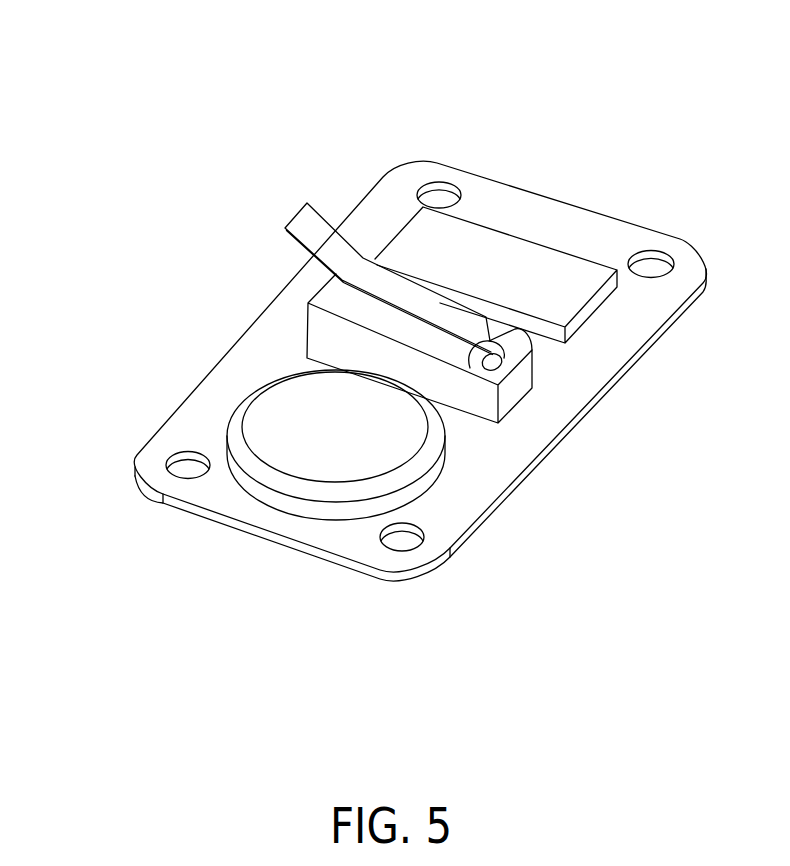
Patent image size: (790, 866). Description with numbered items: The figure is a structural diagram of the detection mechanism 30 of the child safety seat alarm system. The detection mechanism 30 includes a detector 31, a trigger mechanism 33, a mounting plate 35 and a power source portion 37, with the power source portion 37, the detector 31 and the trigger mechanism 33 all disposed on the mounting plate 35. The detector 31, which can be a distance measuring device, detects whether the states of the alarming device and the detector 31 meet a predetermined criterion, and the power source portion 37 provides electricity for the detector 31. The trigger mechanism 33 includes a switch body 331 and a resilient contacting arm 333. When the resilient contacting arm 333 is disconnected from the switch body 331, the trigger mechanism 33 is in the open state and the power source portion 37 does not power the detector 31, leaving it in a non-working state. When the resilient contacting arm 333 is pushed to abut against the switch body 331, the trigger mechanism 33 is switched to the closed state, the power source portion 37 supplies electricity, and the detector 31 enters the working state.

The detection mechanism 30 is at (370, 345).
The detector 31 is at (488, 253).
The trigger mechanism 33 is at (331, 305).
The switch body 331 is at (333, 342).
The resilient contacting arm 333 is at (367, 280).
The mounting plate 35 is at (207, 495).
The power source portion 37 is at (298, 430).